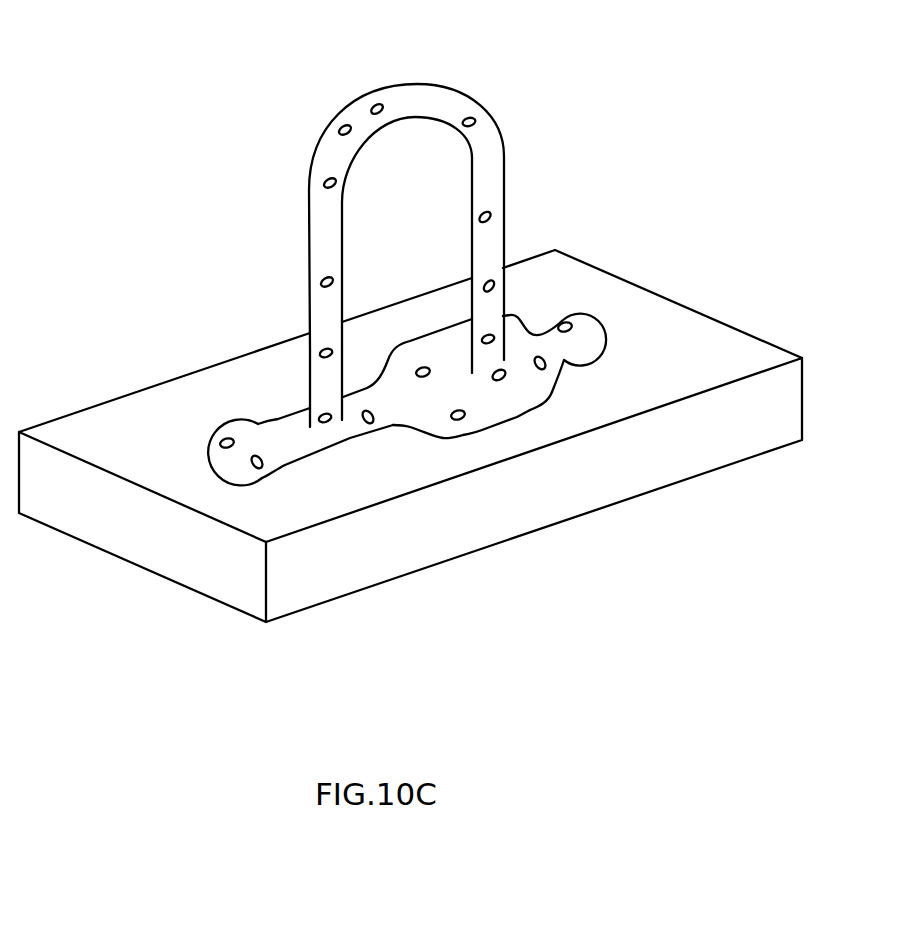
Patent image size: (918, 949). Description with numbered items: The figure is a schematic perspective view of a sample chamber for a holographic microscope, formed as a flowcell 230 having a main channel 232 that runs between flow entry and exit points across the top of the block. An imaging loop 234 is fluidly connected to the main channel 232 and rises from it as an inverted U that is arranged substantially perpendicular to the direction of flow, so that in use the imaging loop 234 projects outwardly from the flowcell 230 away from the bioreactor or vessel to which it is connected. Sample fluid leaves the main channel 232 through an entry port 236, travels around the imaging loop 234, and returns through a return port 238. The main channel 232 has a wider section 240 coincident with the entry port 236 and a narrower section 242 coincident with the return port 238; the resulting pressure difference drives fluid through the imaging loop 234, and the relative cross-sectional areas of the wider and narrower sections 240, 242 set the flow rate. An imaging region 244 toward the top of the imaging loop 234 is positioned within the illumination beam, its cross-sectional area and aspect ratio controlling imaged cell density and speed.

The flowcell 230 is at (660, 340).
The main channel 232 is at (290, 427).
The imaging loop 234 is at (473, 109).
The entry port 236 is at (490, 358).
The return port 238 is at (335, 405).
The wider section 240 is at (498, 425).
The narrower section 242 is at (312, 453).
The imaging region 244 is at (402, 103).